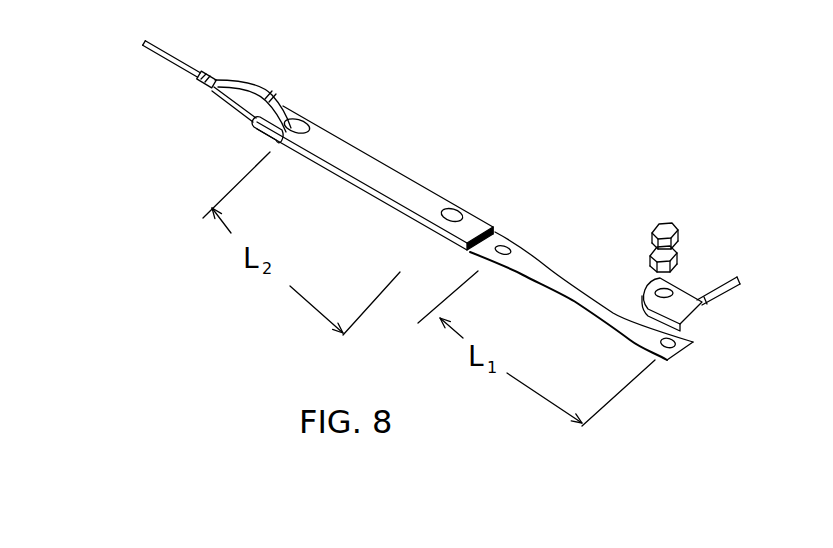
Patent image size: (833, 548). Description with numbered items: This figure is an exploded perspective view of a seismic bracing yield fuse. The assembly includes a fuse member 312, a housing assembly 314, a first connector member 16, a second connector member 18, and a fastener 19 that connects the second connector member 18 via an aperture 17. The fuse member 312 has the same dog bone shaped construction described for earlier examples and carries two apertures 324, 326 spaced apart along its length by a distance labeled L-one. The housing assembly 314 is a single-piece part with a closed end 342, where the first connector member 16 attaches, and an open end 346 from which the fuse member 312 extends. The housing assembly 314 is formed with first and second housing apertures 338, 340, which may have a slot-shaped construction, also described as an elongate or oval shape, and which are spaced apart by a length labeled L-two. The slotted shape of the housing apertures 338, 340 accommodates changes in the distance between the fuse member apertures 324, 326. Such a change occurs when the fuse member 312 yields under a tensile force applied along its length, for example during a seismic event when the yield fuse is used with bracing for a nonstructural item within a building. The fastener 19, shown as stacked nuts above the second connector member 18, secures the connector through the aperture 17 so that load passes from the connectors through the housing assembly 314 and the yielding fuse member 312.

The first connector member 16 is at (183, 63).
The housing assembly 314 is at (407, 154).
The second housing aperture 340 is at (304, 122).
The closed end 342 is at (279, 108).
The first housing aperture 338 is at (455, 214).
The open end 346 is at (495, 229).
The aperture of the fuse member 326 is at (509, 242).
The fuse member 312 is at (549, 258).
The aperture of the fuse member 324 is at (677, 341).
The fastener 19 is at (674, 222).
The aperture 17 is at (669, 291).
The second connector member 18 is at (741, 283).